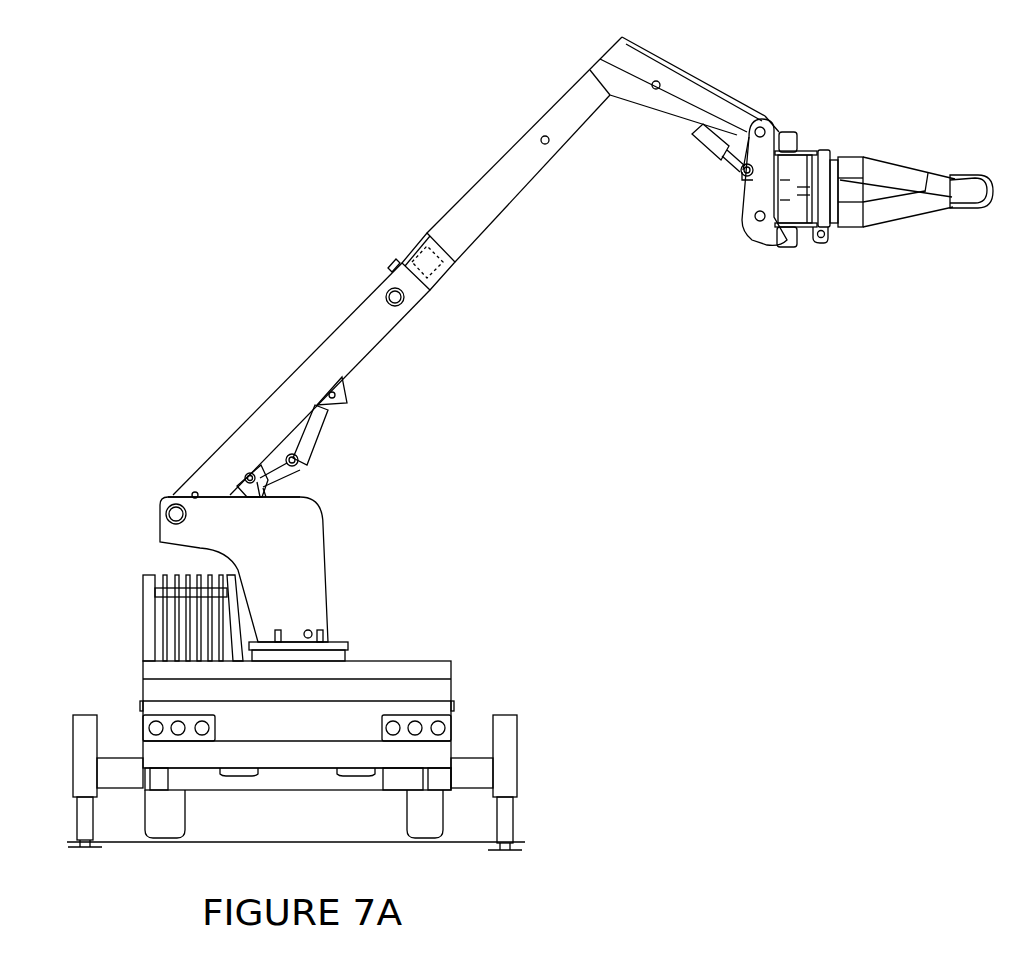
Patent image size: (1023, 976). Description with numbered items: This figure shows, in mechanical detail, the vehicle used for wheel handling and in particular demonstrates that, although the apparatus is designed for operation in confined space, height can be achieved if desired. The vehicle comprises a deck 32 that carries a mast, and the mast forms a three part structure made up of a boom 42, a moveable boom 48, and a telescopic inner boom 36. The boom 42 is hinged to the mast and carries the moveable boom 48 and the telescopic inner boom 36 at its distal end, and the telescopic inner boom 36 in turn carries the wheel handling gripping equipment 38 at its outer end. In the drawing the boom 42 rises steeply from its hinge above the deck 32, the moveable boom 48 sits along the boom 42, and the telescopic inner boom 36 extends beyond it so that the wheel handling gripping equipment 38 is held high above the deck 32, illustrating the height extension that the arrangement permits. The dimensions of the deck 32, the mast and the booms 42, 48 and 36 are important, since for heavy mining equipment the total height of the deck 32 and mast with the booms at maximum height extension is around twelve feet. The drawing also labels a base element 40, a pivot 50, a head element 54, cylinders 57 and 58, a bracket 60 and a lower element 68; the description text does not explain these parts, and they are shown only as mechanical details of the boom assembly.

The deck 32 is at (390, 668).
The telescopic inner boom 36 is at (492, 149).
The wheel handling gripping equipment 38 is at (875, 172).
The pedestal 40 is at (290, 562).
The boom 42 is at (299, 378).
The moveable boom 48 is at (407, 257).
The pivot 50 is at (166, 513).
The boom head housing 54 is at (665, 73).
The boom lift cylinder 57 is at (308, 432).
The tilt cylinder 58 is at (723, 148).
The pivot bracket 60 is at (760, 118).
The lower pivot pin 68 is at (772, 222).